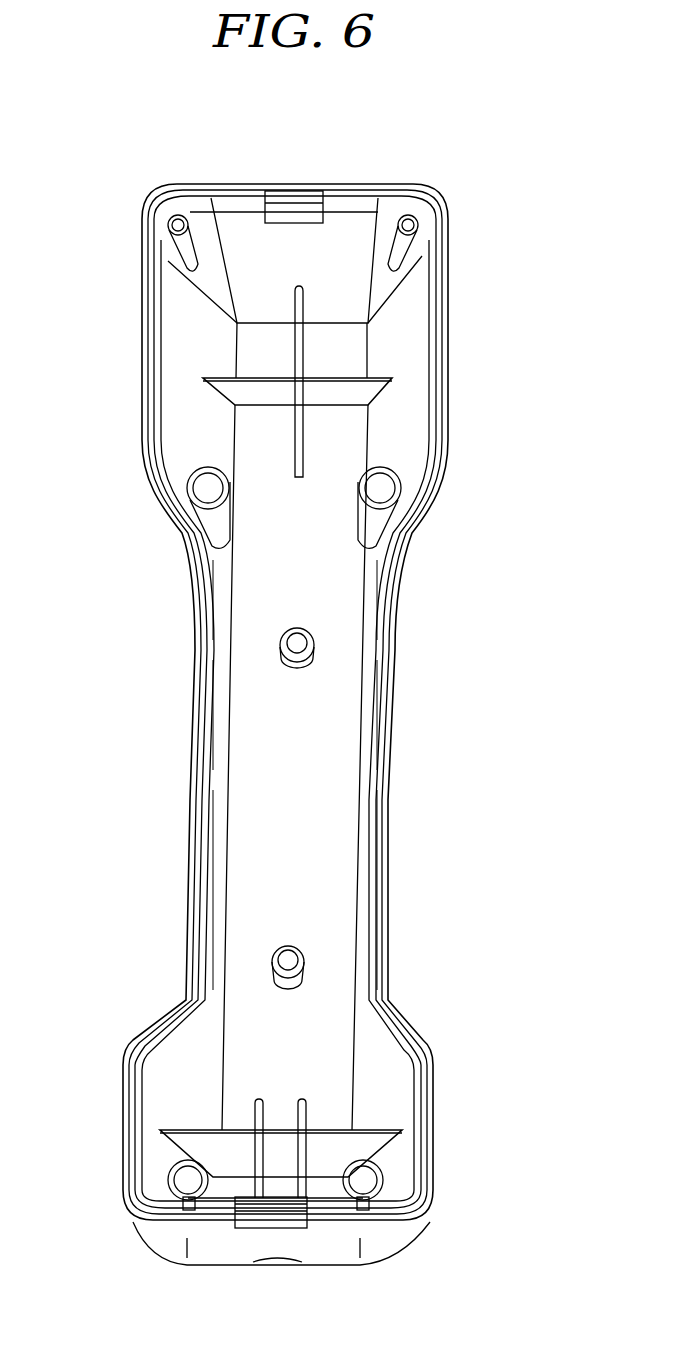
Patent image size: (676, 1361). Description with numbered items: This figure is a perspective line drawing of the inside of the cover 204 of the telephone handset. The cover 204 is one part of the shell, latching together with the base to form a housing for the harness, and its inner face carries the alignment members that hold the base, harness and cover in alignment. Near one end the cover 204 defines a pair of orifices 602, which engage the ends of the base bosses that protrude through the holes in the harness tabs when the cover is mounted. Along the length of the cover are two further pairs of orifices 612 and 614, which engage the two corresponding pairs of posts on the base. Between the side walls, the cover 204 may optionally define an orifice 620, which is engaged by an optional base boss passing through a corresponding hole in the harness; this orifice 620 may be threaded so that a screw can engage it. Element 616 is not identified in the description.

The cover 204 is at (387, 815).
The orifices 602 is at (170, 1198).
The orifices 612 is at (183, 478).
The orifices 614 is at (170, 222).
The side rails / ribs 616 is at (390, 633).
The orifice 620 is at (294, 667).